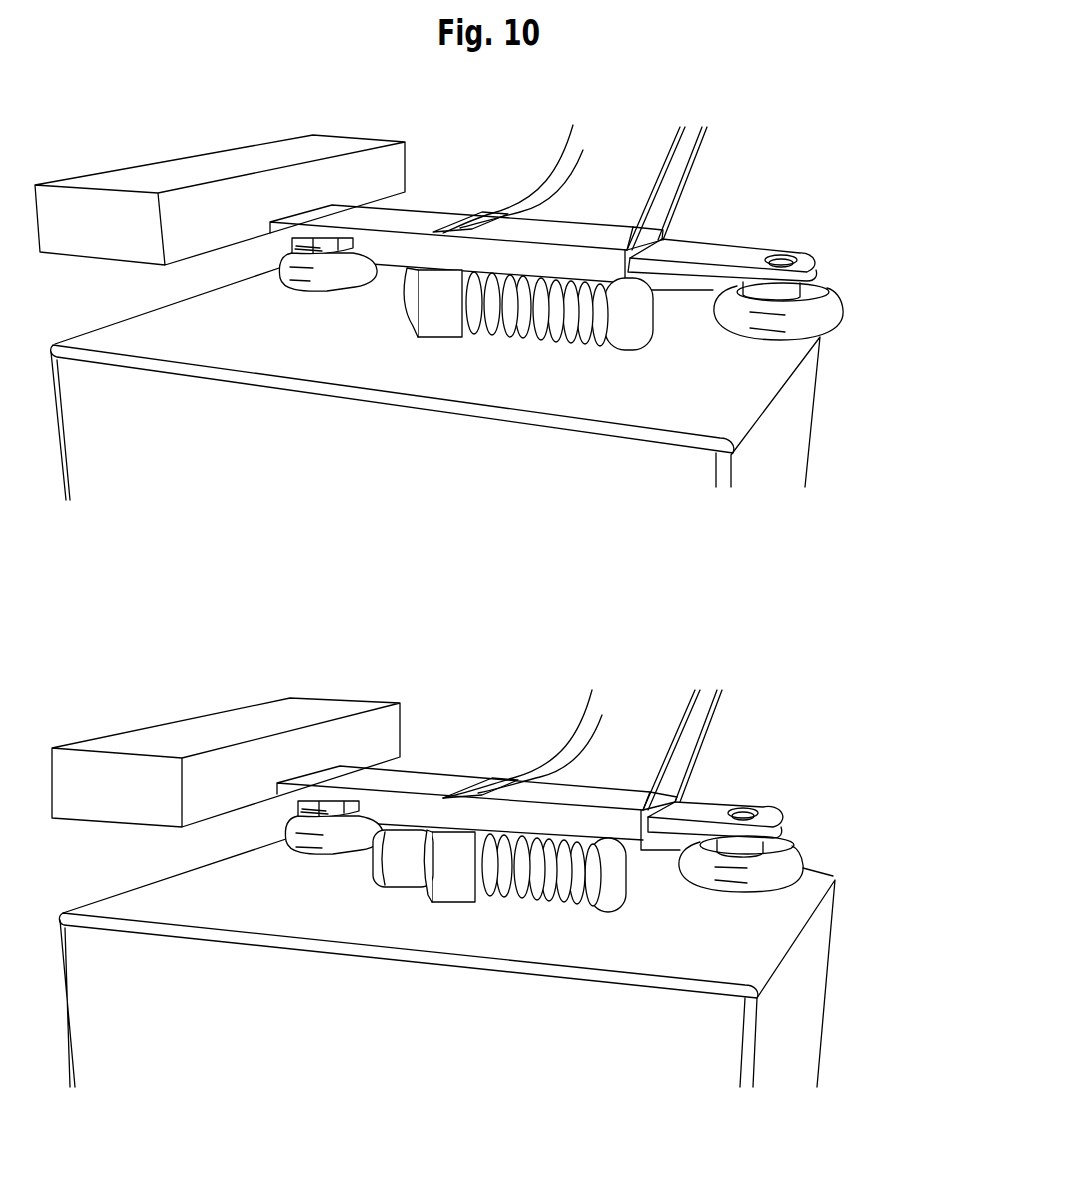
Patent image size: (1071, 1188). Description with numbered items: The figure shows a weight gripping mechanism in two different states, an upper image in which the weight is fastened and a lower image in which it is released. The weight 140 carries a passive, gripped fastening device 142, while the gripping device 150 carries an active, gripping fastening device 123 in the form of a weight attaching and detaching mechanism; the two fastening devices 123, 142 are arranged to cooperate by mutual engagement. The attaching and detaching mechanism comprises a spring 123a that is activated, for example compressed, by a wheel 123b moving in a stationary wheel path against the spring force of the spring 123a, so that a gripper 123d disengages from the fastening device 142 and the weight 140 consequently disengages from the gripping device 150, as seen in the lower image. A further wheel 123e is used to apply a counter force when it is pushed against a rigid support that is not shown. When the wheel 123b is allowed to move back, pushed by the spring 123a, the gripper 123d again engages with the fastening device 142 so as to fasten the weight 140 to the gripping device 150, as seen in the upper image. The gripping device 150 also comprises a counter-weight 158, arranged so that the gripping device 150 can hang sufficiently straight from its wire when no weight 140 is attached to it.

The active fastening device 123 is at (798, 232).
The spring 123a is at (560, 337).
The wheel 123b is at (833, 285).
The gripper 123d is at (410, 320).
The wheel 123e is at (290, 287).
The weight 140 is at (312, 460).
The passive fastening device 142 is at (458, 313).
The gripping device 150 is at (735, 160).
The counter-weight 158 is at (258, 213).